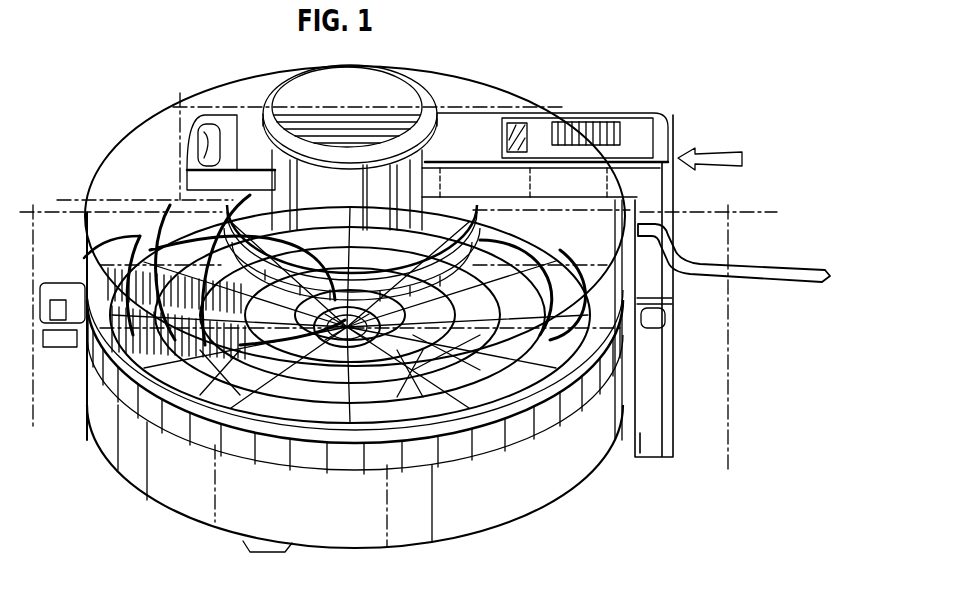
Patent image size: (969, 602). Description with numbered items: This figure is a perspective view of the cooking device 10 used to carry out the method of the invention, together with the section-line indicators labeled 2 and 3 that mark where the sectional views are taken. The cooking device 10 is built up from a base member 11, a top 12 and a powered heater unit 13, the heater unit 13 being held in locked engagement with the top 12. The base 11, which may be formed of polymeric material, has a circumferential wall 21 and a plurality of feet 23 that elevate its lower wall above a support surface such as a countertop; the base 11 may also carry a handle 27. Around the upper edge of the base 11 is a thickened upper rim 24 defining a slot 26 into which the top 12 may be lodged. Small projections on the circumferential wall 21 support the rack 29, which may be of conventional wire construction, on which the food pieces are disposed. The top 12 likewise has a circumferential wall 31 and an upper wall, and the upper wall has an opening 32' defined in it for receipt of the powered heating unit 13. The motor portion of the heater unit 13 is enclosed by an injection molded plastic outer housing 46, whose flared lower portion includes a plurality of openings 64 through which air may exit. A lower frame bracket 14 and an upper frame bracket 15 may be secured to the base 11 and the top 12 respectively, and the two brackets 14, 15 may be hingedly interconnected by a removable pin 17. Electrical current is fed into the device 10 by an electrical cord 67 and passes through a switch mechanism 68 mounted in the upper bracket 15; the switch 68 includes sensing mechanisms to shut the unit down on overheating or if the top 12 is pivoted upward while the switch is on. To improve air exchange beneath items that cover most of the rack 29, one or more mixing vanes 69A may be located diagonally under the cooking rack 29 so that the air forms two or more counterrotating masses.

The cooking device 10 is at (112, 112).
The base member 11 is at (192, 502).
The top 12 is at (462, 102).
The powered heater unit 13 is at (357, 66).
The lower frame bracket 14 is at (672, 417).
The upper frame bracket 15 is at (581, 138).
The removable pin 17 is at (672, 301).
The circumferential wall 21 is at (120, 443).
The feet 23 is at (268, 548).
The thickened upper rim 24 is at (98, 367).
The slot 26 is at (140, 236).
The handle 27 is at (38, 300).
The rack 29 is at (143, 323).
The circumferential wall 31 is at (84, 258).
The opening 32' is at (231, 121).
The outer housing 46 is at (420, 153).
The openings 64 is at (307, 328).
The electrical cord 67 is at (789, 258).
The switch mechanism 68 is at (597, 125).
The mixing vanes 69A is at (665, 320).
The section line 2- 2 is at (38, 438).
The section line 3- 3 is at (67, 197).